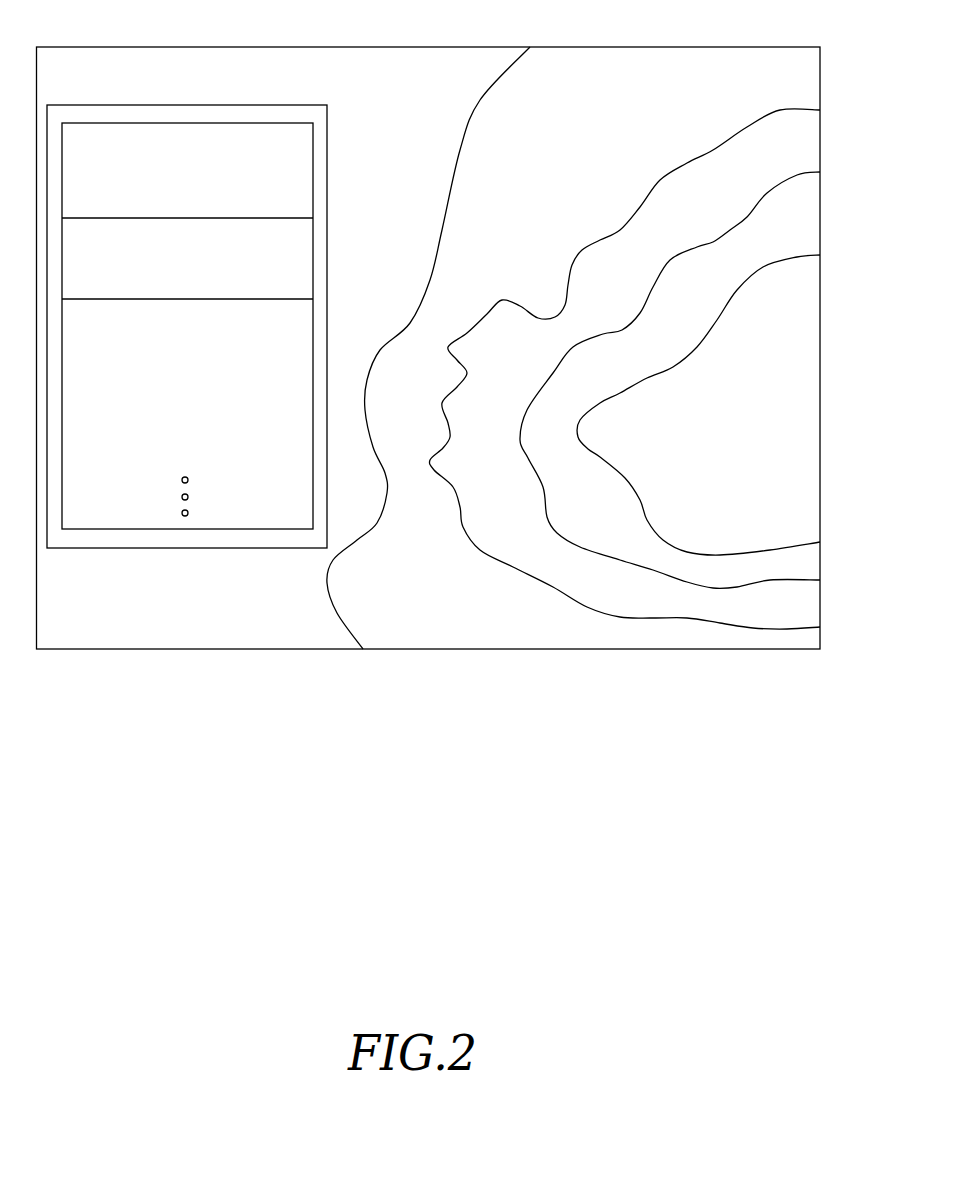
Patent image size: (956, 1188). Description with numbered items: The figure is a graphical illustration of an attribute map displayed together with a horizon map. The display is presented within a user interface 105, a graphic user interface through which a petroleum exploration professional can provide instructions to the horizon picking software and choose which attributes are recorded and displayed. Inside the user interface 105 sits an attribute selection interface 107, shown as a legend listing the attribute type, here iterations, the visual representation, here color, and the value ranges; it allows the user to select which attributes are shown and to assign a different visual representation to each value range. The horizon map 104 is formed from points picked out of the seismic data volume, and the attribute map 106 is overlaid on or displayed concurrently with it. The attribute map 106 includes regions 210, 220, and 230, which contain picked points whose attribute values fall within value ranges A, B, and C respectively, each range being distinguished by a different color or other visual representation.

The horizon map 104 is at (474, 122).
The user interface 105 is at (749, 47).
The attribute map 106 is at (537, 258).
The attribute selection interface 107 is at (187, 105).
The region 210 is at (762, 408).
The region 220 is at (708, 327).
The region 230 is at (642, 285).